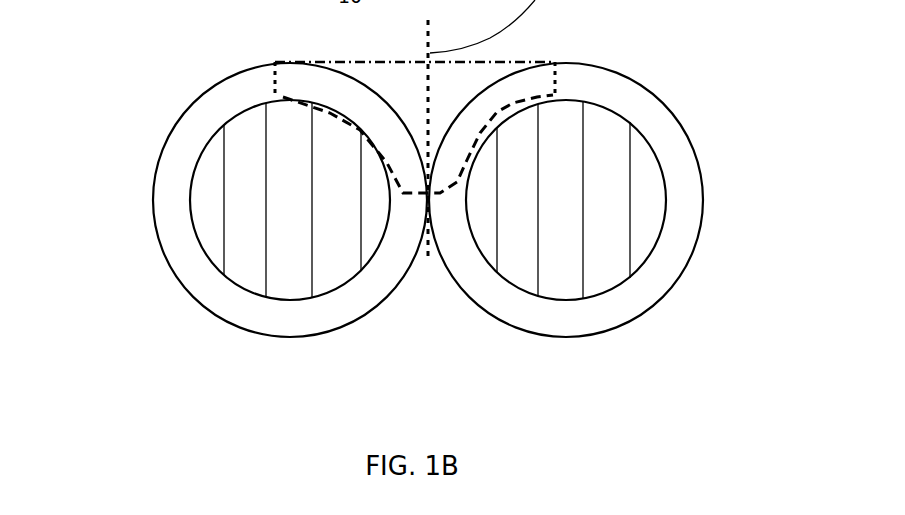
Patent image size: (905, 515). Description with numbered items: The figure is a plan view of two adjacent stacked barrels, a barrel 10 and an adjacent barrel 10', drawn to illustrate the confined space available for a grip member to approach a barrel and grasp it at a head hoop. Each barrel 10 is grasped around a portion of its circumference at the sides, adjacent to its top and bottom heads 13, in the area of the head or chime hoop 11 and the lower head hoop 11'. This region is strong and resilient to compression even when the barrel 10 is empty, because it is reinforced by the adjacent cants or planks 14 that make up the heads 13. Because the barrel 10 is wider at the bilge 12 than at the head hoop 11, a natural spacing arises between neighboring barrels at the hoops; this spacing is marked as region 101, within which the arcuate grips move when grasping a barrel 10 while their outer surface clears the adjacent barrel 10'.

The barrel 10 is at (242, 172).
The adjacent barrel 10' is at (644, 225).
The head hoop 11 is at (425, 178).
The lower head hoop 11' is at (172, 18).
The bilge 12 is at (703, 207).
The head 13 is at (336, 249).
The cants or planks 14 is at (203, 228).
The region 101 is at (418, 99).